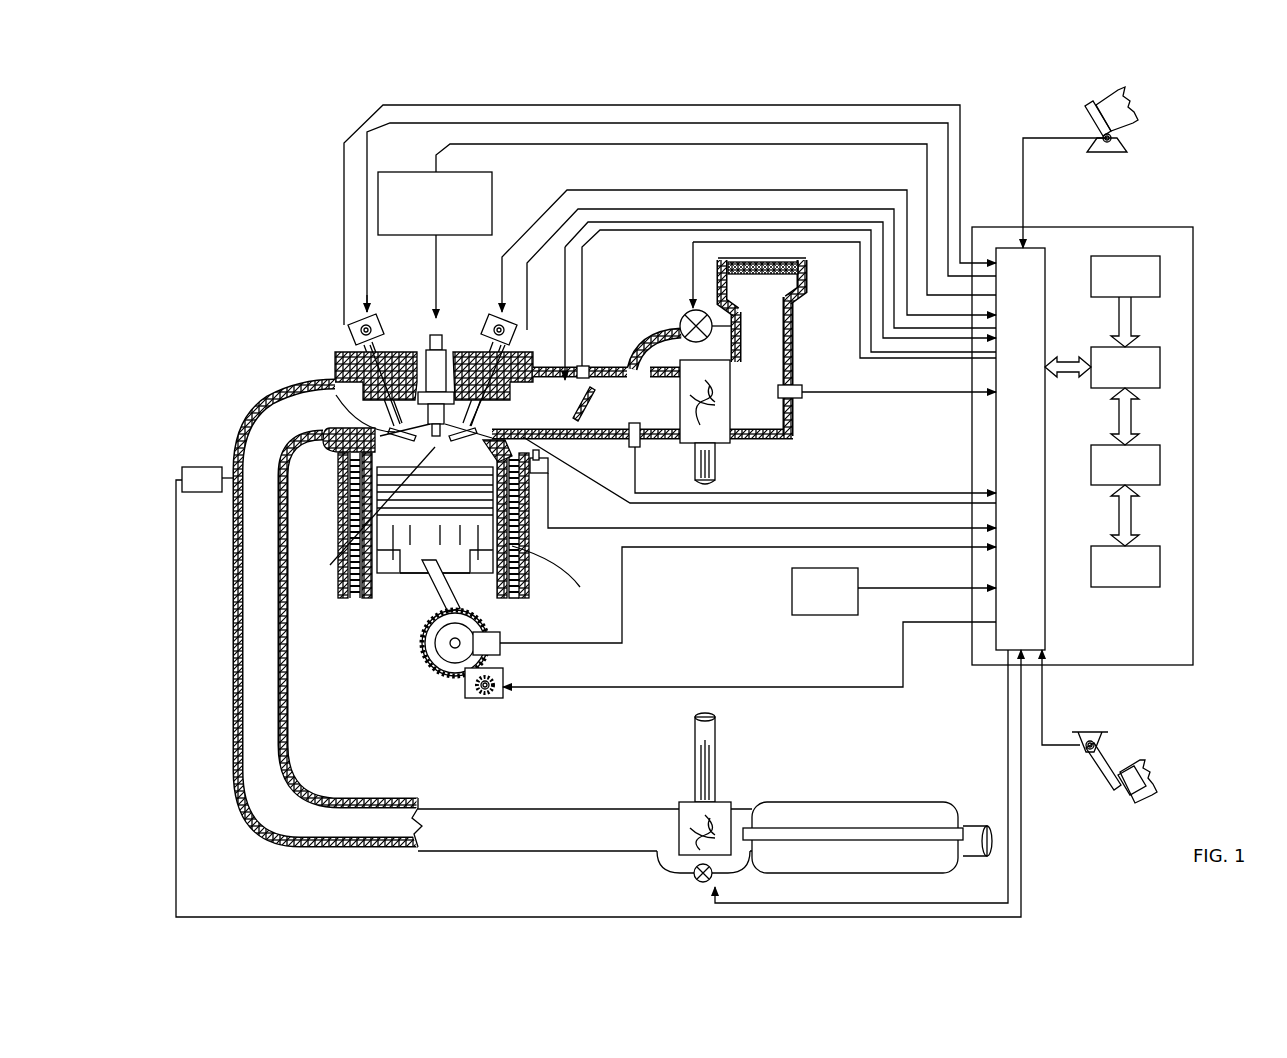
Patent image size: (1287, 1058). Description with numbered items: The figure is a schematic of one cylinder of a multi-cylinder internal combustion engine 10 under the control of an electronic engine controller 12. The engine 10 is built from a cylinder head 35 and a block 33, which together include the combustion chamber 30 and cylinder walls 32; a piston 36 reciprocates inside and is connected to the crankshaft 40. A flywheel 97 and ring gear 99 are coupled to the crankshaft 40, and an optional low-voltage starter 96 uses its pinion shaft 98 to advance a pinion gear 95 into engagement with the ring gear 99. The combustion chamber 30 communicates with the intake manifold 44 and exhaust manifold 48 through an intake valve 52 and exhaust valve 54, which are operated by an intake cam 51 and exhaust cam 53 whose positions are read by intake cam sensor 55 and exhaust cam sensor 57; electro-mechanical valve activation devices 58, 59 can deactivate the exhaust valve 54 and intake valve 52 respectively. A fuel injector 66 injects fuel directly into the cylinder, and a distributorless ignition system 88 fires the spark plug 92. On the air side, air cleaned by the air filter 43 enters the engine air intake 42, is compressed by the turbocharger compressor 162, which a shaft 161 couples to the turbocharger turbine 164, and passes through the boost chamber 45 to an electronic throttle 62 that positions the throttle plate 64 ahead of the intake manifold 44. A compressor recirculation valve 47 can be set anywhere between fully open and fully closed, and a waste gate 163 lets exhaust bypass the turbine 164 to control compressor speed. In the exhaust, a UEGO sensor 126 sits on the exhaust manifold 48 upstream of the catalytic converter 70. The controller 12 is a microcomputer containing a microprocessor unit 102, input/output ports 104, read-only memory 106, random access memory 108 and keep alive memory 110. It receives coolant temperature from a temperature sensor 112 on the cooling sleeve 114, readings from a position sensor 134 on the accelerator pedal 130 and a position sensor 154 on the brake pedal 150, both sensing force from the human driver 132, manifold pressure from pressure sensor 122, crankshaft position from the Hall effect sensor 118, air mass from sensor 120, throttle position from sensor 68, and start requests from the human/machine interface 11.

The internal combustion engine 10 is at (272, 305).
The human/machine interface 11 is at (894, 591).
The electronic engine controller 12 is at (1193, 230).
The combustion chamber 30 is at (367, 511).
The cylinder walls 32 is at (378, 595).
The block 33 is at (338, 495).
The cylinder head 35 is at (333, 348).
The piston 36 is at (418, 585).
The crankshaft 40 is at (430, 672).
The engine air intake 42 is at (640, 282).
The air filter 43 is at (778, 272).
The intake manifold 44 is at (642, 403).
The boost chamber 45 is at (708, 366).
The compressor recirculation valve 47 is at (684, 313).
The exhaust manifold 48 is at (330, 615).
The intake cam 51 is at (484, 312).
The intake valve 52 is at (478, 412).
The exhaust cam 53 is at (383, 312).
The exhaust valve 54 is at (338, 390).
The intake cam sensor 55 is at (520, 335).
The exhaust cam sensor 57 is at (352, 325).
The valve activation device 58 is at (386, 330).
The valve activation device 59 is at (492, 330).
The electronic throttle 62 is at (590, 400).
The throttle plate 64 is at (582, 418).
The fuel injector 66 is at (548, 505).
The throttle position sensor 68 is at (570, 375).
The catalytic converter 70 is at (788, 803).
The distributorless ignition system 88 is at (394, 172).
The spark plug 92 is at (440, 332).
The pinion gear 95 is at (486, 696).
The starter 96 is at (492, 695).
The flywheel 97 is at (430, 640).
The pinion shaft 98 is at (480, 698).
The ring gear 99 is at (452, 678).
The microprocessor unit 102 is at (1160, 368).
The input/output ports 104 is at (1045, 262).
The read-only memory 106 is at (1160, 278).
The random access memory 108 is at (1160, 467).
The keep alive memory 110 is at (1160, 568).
The temperature sensor 112 is at (764, 489).
The cooling sleeve 114 is at (563, 581).
The Hall effect sensor 118 is at (500, 638).
The air mass sensor 120 is at (802, 390).
The pressure sensor 122 is at (629, 445).
The Universal Exhaust Gas Oxygen sensor 126 is at (182, 472).
The accelerator pedal 130 is at (1088, 116).
The human driver 132 is at (1132, 106).
The position sensor 134 is at (1112, 138).
The brake pedal 150 is at (1115, 790).
The position sensor 154 is at (1080, 745).
The shaft 161 is at (695, 462).
The turbocharger compressor 162 is at (722, 440).
The waste gate 163 is at (696, 882).
The turbocharger turbine 164 is at (685, 805).